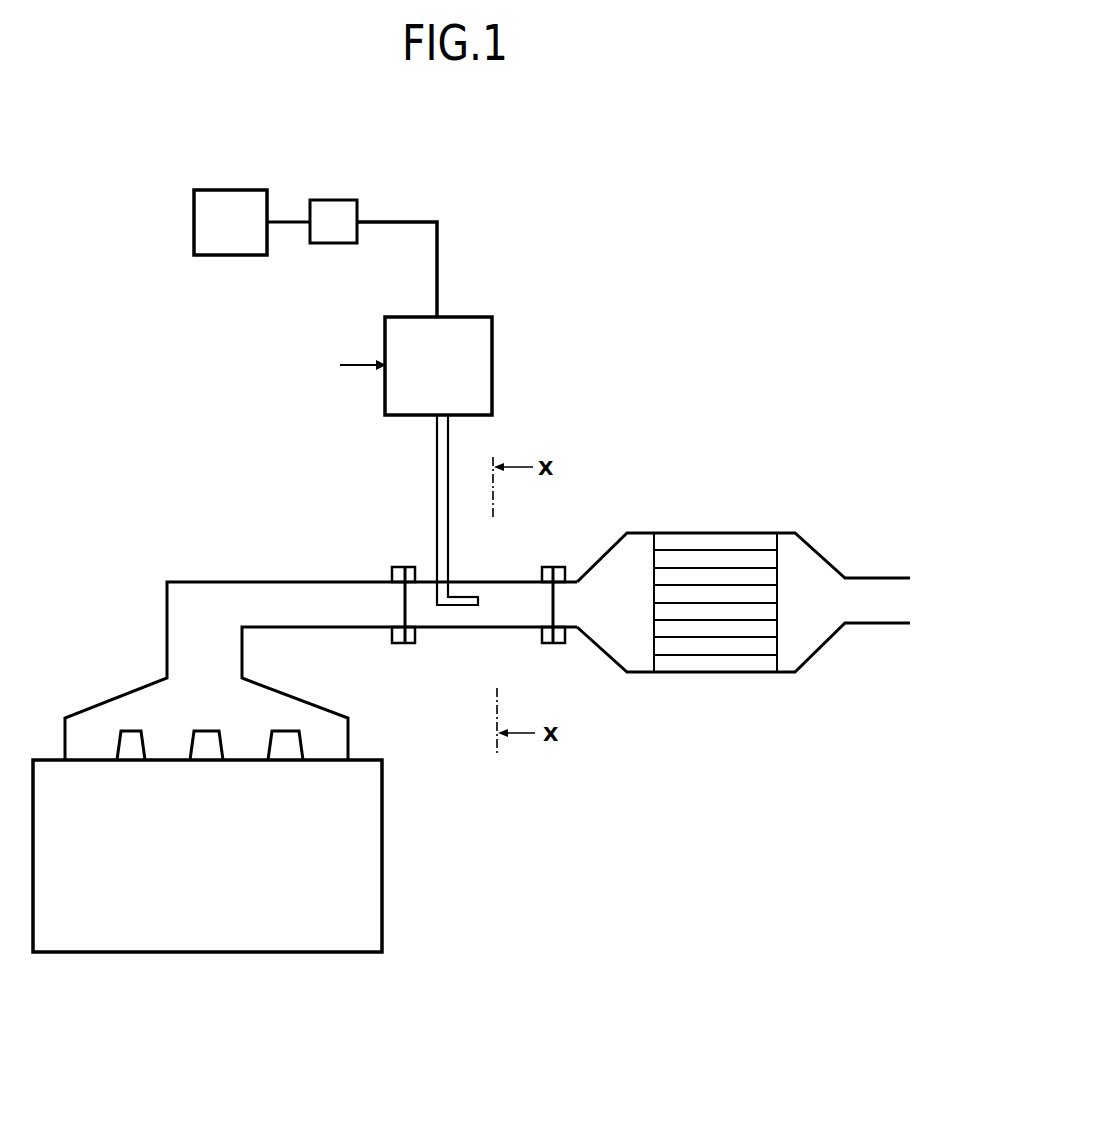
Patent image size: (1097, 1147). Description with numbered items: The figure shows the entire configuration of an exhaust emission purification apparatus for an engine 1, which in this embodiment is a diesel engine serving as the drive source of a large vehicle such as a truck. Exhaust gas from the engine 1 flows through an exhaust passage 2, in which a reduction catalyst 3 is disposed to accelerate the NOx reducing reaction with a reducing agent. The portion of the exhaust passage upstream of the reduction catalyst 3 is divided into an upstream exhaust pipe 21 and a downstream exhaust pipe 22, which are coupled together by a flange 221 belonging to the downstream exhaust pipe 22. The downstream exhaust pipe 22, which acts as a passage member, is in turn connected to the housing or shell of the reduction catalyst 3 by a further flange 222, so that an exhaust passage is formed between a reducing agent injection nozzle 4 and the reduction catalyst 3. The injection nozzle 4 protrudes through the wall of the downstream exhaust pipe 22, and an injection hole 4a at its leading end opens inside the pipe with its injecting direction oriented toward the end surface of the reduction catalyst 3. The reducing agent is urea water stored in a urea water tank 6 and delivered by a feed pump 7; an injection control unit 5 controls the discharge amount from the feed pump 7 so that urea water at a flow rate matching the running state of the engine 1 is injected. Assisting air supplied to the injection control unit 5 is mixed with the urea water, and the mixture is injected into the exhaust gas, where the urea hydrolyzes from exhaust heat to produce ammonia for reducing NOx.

The engine 1 is at (383, 910).
The exhaust passage 2 is at (335, 620).
The upstream exhaust pipe 21 is at (332, 581).
The downstream exhaust pipe 22 is at (457, 628).
The flange 221 is at (410, 644).
The flange 222 is at (552, 644).
The reduction catalyst 3 is at (732, 662).
The injection nozzle 4 is at (450, 540).
The injection hole 4a is at (481, 601).
The injection control unit 5 is at (480, 317).
The urea water tank 6 is at (214, 190).
The feed pump 7 is at (327, 200).